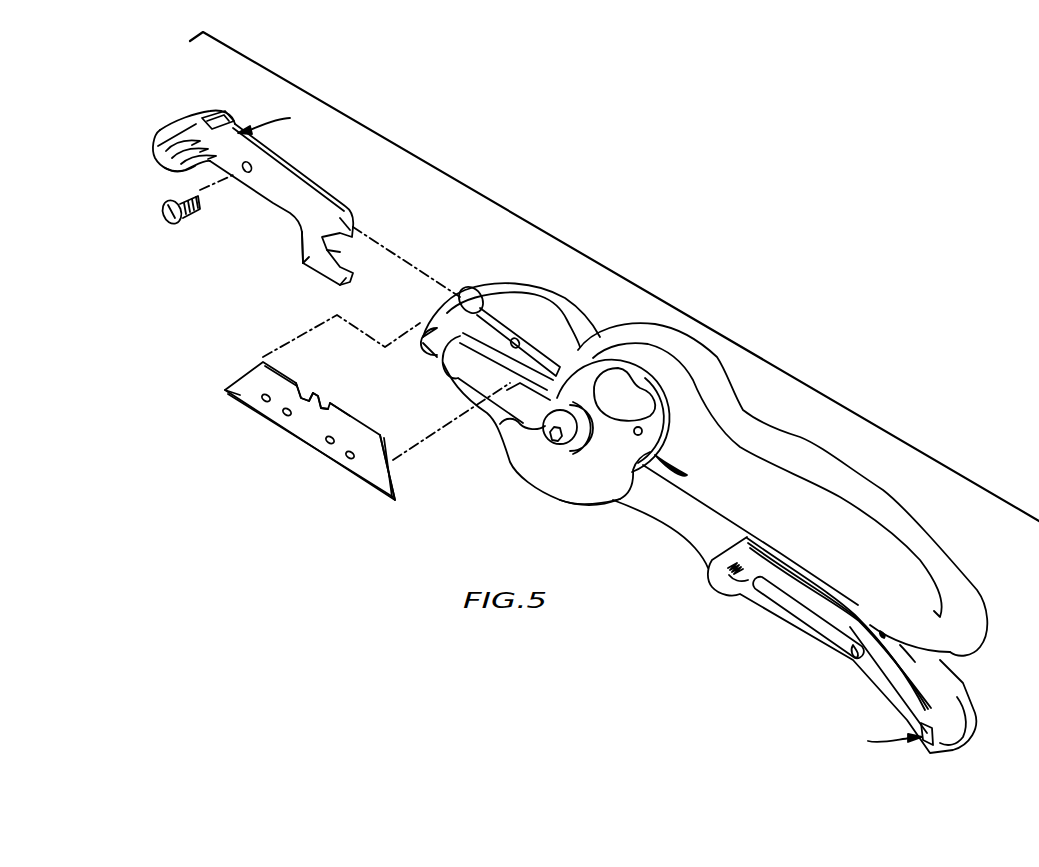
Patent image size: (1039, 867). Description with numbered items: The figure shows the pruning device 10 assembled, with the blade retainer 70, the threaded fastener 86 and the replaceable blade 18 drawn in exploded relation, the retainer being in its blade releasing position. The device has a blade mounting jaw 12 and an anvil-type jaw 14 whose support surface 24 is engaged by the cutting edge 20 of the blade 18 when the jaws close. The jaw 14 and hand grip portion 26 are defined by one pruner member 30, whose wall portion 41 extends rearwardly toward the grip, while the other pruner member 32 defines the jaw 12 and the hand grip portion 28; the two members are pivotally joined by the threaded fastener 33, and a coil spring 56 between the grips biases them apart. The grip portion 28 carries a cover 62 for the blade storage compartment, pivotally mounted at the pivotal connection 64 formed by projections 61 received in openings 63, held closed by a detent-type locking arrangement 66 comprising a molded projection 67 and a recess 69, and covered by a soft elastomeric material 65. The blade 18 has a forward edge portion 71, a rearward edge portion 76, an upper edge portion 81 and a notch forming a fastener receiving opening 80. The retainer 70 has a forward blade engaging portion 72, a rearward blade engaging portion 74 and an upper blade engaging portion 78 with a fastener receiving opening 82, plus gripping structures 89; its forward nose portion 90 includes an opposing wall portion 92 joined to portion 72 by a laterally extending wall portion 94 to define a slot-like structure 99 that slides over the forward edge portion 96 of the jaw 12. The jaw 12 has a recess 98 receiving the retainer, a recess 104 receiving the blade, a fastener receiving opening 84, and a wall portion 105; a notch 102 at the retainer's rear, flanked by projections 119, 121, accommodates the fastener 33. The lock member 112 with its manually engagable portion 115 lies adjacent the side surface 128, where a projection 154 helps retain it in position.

The pruning device 10 is at (474, 191).
The blade mounting jaw 12 is at (491, 311).
The anvil-type jaw 14 is at (532, 431).
The replaceable blade 18 is at (283, 383).
The cutting edge 20 is at (290, 436).
The support surface 24 is at (455, 366).
The hand grip portion 26 is at (800, 454).
The hand grip portion 28 is at (819, 665).
The pruner member 30 is at (863, 499).
The pruner member 32 is at (655, 509).
The threaded fastener 33 is at (565, 450).
The wall portion 41 is at (603, 496).
The coil spring 56 is at (674, 465).
The projections 61 is at (924, 748).
The cover 62 is at (733, 594).
The openings 63 is at (934, 729).
The pivotal connection 64 is at (884, 743).
The elastomeric material 65 is at (797, 628).
The locking arrangement 66 is at (903, 646).
The projection 67 is at (866, 620).
The recess 69 is at (856, 649).
The blade retainer 70 is at (195, 130).
The forward edge portion 71 is at (235, 389).
The forward blade engaging portion 72 is at (166, 169).
The rearward blade engaging portion 74 is at (302, 264).
The rearward edge portion 76 is at (377, 479).
The upper blade engaging portion 78 is at (273, 174).
The fastener receiving opening 80 is at (306, 403).
The upper edge portion 81 is at (338, 415).
The fastener receiving opening 82 is at (250, 162).
The fastener receiving opening 84 is at (518, 346).
The threaded fastener 86 is at (192, 209).
The gripping structures 89 is at (161, 147).
The forward nose portion 90 is at (225, 189).
The opposing wall portion 92 is at (233, 120).
The laterally extending wall portion 94 is at (209, 110).
The forward edge portion 96 is at (452, 325).
The recess 98 is at (477, 290).
The slot-like structure 99 is at (275, 119).
The notch 102 is at (338, 255).
The recess 104 is at (433, 344).
The wall portion 105 is at (545, 373).
The lock member 112 is at (657, 403).
The manually engagable portion 115 is at (637, 412).
The projection 119 is at (340, 219).
The projection 121 is at (328, 281).
The side surface 128 is at (648, 380).
The projection 154 is at (636, 435).